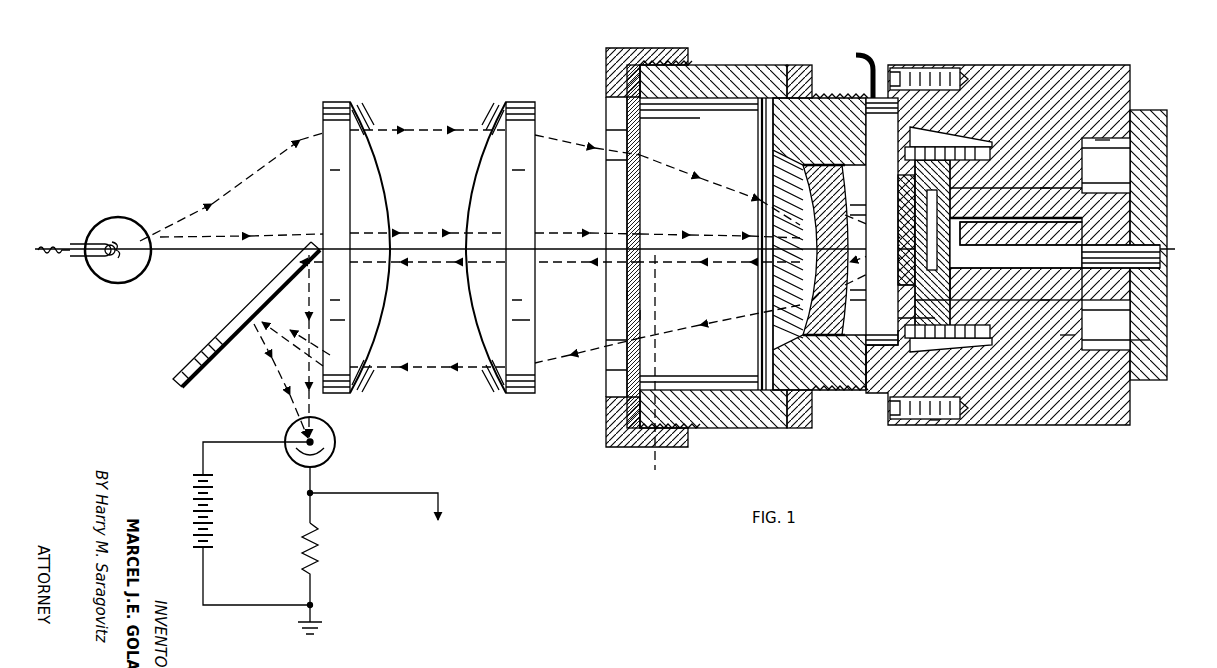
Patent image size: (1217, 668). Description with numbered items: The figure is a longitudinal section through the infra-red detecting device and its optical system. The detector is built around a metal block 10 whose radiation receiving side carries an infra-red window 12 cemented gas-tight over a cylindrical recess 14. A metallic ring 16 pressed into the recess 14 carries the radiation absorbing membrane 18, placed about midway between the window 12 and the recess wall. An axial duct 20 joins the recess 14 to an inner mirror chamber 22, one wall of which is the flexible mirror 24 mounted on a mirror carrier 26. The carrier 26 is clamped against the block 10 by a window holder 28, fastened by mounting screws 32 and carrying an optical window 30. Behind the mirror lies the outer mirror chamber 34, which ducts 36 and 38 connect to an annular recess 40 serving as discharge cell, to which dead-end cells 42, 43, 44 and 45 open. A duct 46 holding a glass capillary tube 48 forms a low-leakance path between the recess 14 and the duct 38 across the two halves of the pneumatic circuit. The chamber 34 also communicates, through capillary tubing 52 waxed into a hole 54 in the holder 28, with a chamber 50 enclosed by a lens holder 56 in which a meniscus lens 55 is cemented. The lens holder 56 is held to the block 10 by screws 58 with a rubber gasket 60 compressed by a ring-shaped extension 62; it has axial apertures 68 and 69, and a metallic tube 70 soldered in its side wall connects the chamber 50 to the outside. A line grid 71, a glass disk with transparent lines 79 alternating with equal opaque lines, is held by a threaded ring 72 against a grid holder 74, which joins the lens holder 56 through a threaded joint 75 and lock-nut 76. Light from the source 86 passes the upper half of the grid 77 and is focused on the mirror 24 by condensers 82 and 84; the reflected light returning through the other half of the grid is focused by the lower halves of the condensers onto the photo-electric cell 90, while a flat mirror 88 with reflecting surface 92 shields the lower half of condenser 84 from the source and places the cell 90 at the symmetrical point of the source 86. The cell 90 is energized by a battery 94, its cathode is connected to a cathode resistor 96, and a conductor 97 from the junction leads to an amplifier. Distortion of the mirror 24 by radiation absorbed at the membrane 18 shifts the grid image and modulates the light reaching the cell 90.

The block 10 is at (1086, 425).
The infra-red window 12 is at (1150, 345).
The cylindrical recess 14 is at (1150, 262).
The cylindrical metallic ring 16 is at (1145, 285).
The radiation absorbing membrane 18 is at (1130, 230).
The duct 20 is at (1006, 242).
The inner mirror chamber 22 is at (905, 232).
The flexible mirror 24 is at (992, 259).
The mirror carrier 26 is at (990, 178).
The window holder 28 is at (912, 171).
The optical window 30 is at (903, 287).
The mounting screws 32 is at (990, 128).
The outer mirror chamber 34 is at (905, 260).
The duct 36 is at (1043, 190).
The duct 38 is at (1043, 302).
The annular recess 40 is at (1132, 108).
The dead-end cell 42 is at (1098, 150).
The dead-end cell 43 is at (1085, 182).
The dead-end cell 44 is at (1084, 328).
The dead-end cell 45 is at (1068, 338).
The duct 46 is at (988, 336).
The glass capillary tube 48 is at (1150, 253).
The chamber 50 is at (864, 98).
The capillary glass tubing 52 is at (912, 322).
The hole 54 is at (910, 303).
The meniscus lens 55 is at (813, 296).
The lens holder 56 is at (841, 394).
The screws 58 is at (949, 70).
The cylindrical rubber gasket 60 is at (938, 420).
The ring-shaped extension 62 is at (905, 352).
The axial aperture 68 is at (870, 350).
The axial aperture 69 is at (797, 262).
The metallic tube 70 is at (874, 52).
The line grid 71 is at (627, 190).
The threaded ring 72 is at (625, 50).
The grid holder 74 is at (734, 428).
The threaded joint 75 is at (822, 395).
The lock-nut 76 is at (795, 428).
The line grid 77 is at (640, 314).
The transparent lines 79 is at (627, 296).
The condenser lens 82 is at (521, 102).
The condenser lens 84 is at (335, 102).
The light source 86 is at (118, 217).
The flat mirror 88 is at (177, 386).
The photo-electric cell 90 is at (335, 445).
The reflecting surface 92 is at (215, 348).
The battery 94 is at (194, 474).
The cathode resistor 96 is at (319, 565).
The conductor 97 is at (390, 492).